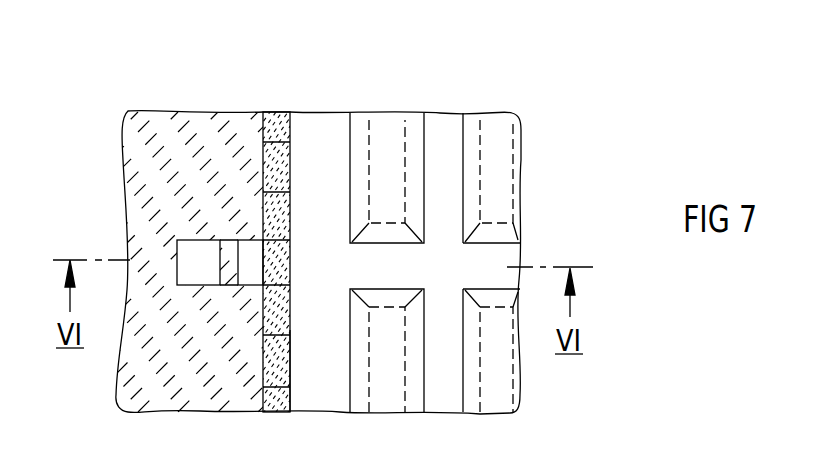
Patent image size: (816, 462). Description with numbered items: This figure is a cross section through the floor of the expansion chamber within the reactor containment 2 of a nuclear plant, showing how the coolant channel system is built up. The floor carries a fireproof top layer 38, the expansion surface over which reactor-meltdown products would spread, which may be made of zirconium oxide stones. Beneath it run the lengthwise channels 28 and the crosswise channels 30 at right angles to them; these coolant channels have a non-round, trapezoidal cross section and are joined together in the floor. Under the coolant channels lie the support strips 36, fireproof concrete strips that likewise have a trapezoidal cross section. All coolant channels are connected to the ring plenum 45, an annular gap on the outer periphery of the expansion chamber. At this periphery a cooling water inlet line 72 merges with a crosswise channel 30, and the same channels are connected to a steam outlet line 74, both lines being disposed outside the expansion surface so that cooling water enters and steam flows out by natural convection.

The reactor containment 2 is at (163, 148).
The lengthwise channel 28 is at (448, 136).
The crosswise channel 30 is at (486, 262).
The support strip 36 is at (390, 128).
The top layer 38 is at (278, 120).
The ring plenum 45 is at (314, 383).
The cooling water inlet line 72 is at (193, 263).
The steam outlet line 74 is at (249, 248).